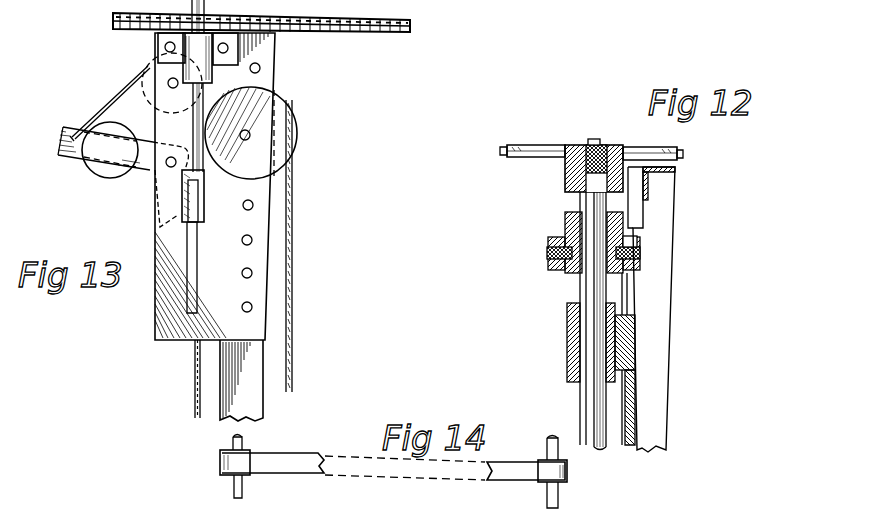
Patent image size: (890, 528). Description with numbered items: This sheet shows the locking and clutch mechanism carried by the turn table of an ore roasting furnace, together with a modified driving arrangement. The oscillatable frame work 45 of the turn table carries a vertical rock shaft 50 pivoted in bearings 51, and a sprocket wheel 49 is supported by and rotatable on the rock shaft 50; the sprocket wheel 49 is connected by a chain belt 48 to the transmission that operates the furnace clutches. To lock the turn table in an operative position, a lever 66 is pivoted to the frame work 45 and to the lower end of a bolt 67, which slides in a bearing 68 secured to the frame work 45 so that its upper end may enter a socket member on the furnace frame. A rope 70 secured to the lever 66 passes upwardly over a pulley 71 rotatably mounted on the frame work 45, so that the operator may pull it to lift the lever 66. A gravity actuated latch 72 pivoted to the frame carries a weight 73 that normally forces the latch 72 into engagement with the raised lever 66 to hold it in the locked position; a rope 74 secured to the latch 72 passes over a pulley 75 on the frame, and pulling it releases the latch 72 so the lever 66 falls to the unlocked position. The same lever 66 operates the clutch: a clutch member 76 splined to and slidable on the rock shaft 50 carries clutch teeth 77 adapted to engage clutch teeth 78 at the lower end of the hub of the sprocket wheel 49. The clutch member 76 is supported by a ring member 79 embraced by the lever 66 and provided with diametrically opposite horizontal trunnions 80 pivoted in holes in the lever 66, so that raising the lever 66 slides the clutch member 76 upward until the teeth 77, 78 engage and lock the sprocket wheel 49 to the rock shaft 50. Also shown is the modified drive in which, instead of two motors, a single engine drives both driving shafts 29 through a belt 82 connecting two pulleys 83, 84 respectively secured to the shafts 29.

In FIG. 14, the driving shaft 29 is at (233, 488).
In FIG. 13, the frame work 45 is at (252, 405).
In FIG. 12, the frame work 45 is at (660, 198).
In FIG. 13, the chain belt 48 is at (378, 31).
In FIG. 13, the sprocket wheel 49 is at (117, 18).
In FIG. 12, the sprocket wheel 49 is at (543, 144).
In FIG. 12, the rock shaft 50 is at (588, 401).
In FIG. 12, the bearing 51 is at (567, 352).
In FIG. 13, the lever 66 is at (187, 213).
In FIG. 13, the bolt 67 is at (197, 113).
In FIG. 13, the bearing 68 is at (190, 72).
In FIG. 13, the rope 70 is at (292, 210).
In FIG. 13, the pulley 71 is at (280, 128).
In FIG. 13, the gravity actuated latch 72 is at (137, 172).
In FIG. 13, the weight 73 is at (88, 167).
In FIG. 13, the rope 74 is at (120, 95).
In FIG. 13, the pulley 75 is at (150, 90).
In FIG. 12, the clutch member 76 is at (637, 242).
In FIG. 12, the clutch teeth 77 is at (565, 214).
In FIG. 12, the clutch teeth 78 is at (566, 191).
In FIG. 12, the ring member 79 is at (624, 277).
In FIG. 12, the trunnion 80 is at (547, 250).
In FIG. 14, the belt 82 is at (393, 478).
In FIG. 14, the pulley 83 is at (220, 468).
In FIG. 14, the pulley 84 is at (565, 482).